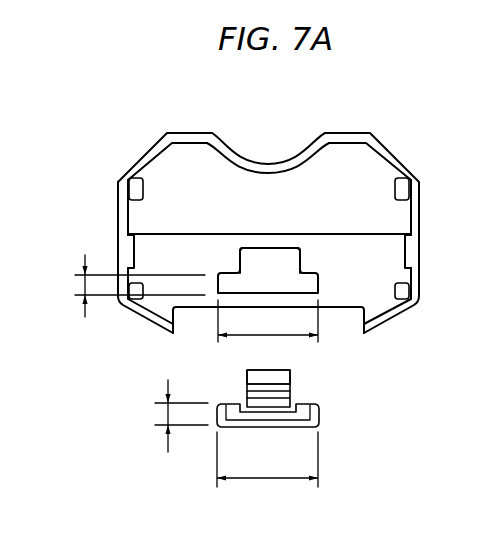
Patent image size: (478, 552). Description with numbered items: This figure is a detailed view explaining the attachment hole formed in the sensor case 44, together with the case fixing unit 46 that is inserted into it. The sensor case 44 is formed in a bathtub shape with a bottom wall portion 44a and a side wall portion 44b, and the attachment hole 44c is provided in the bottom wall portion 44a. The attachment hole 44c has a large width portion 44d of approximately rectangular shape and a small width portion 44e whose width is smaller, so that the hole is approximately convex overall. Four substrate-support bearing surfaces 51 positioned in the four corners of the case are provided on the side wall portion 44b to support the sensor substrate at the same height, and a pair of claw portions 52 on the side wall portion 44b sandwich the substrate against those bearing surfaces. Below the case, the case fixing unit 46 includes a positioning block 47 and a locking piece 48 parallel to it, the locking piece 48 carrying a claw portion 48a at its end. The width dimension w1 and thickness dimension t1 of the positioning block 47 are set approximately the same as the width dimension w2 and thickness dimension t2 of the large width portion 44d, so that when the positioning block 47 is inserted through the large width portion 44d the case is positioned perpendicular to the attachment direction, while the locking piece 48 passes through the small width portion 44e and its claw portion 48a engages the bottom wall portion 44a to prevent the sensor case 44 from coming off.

The sensor case 44 is at (252, 223).
The bottom wall portion 44a is at (274, 196).
The side wall portion 44b is at (118, 217).
The attachment hole 44c is at (286, 251).
The large width portion 44d is at (300, 287).
The small width portion 44e is at (256, 262).
The case fixing unit 46 is at (217, 429).
The positioning block 47 is at (320, 430).
The locking piece 48 is at (295, 379).
The claw portion 48a is at (262, 378).
The substrate-support bearing surface 51 is at (135, 186).
The claw portion 52 is at (136, 249).
The thickness dimension t1 is at (166, 414).
The thickness dimension t2 is at (83, 289).
The width dimension w1 is at (267, 459).
The width dimension w2 is at (268, 321).